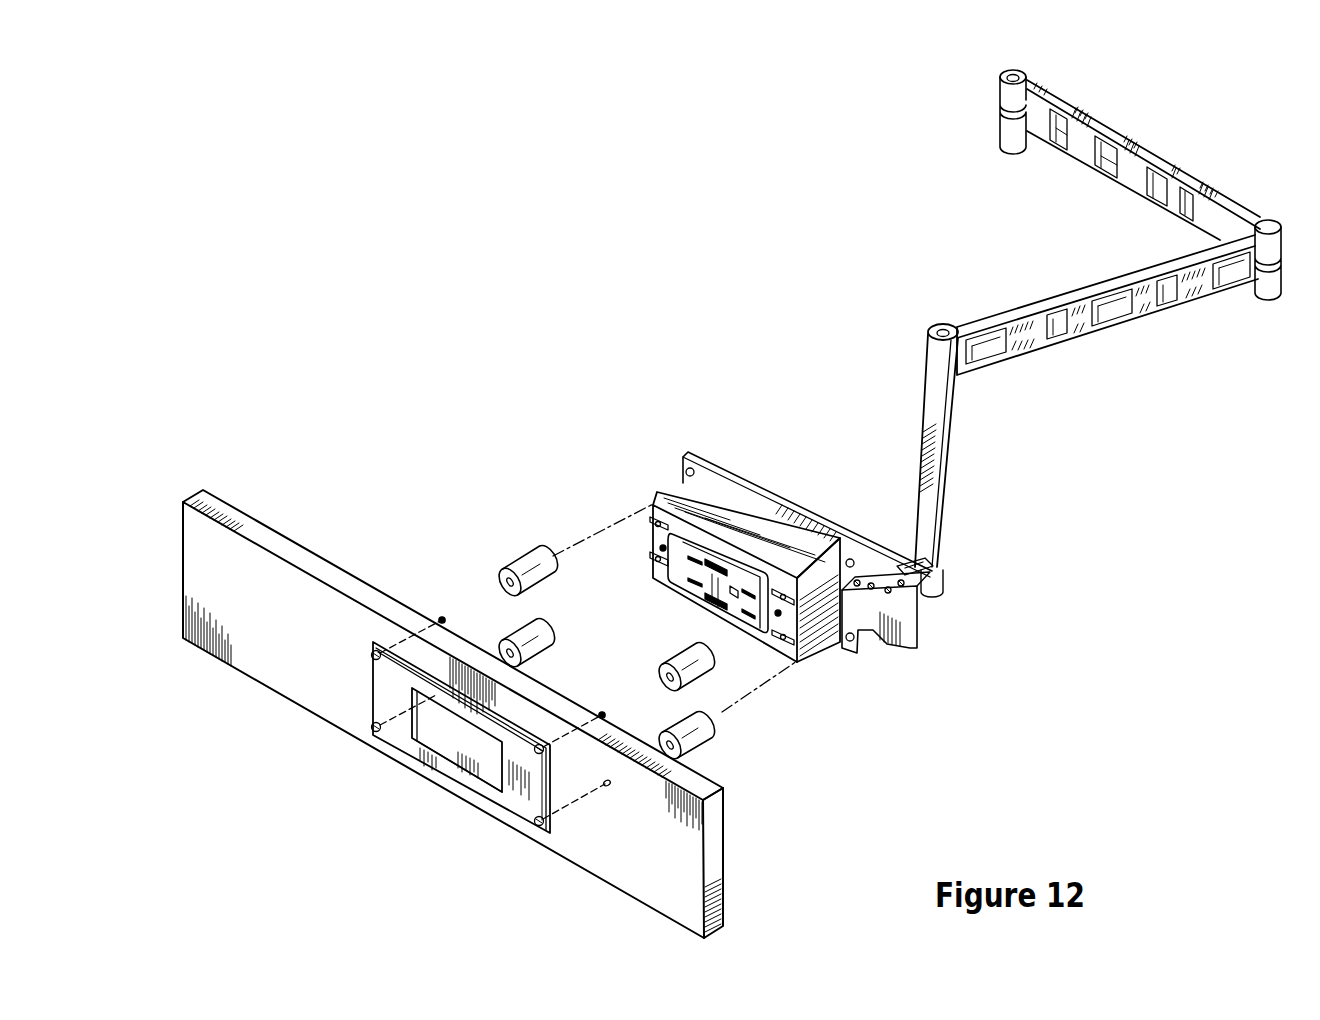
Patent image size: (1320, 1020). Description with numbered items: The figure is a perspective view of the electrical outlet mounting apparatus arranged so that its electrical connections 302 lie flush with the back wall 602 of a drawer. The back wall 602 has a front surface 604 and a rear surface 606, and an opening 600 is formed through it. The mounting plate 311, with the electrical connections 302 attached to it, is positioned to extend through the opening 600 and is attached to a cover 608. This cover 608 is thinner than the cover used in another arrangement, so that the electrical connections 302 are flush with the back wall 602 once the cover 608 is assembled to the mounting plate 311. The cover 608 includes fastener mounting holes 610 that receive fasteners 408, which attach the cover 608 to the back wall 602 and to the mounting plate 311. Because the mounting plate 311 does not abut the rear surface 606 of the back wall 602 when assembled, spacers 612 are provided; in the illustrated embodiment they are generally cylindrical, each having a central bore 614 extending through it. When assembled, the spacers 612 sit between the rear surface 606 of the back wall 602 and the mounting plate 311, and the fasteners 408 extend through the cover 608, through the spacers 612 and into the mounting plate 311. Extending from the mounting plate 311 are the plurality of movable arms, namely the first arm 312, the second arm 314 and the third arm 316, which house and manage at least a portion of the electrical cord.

The electrical connections 302 is at (697, 594).
The mounting plate 311 is at (938, 628).
The first arm 312 is at (1125, 152).
The second arm 314 is at (1093, 300).
The third arm 316 is at (940, 457).
The fasteners 408 is at (400, 643).
The opening 600 is at (468, 738).
The back wall 602 is at (740, 852).
The front surface 604 is at (225, 590).
The rear surface 606 is at (322, 562).
The cover 608 is at (492, 793).
The fastener mounting holes 610 is at (372, 657).
The spacers 612 is at (552, 628).
The central bore 614 is at (510, 580).